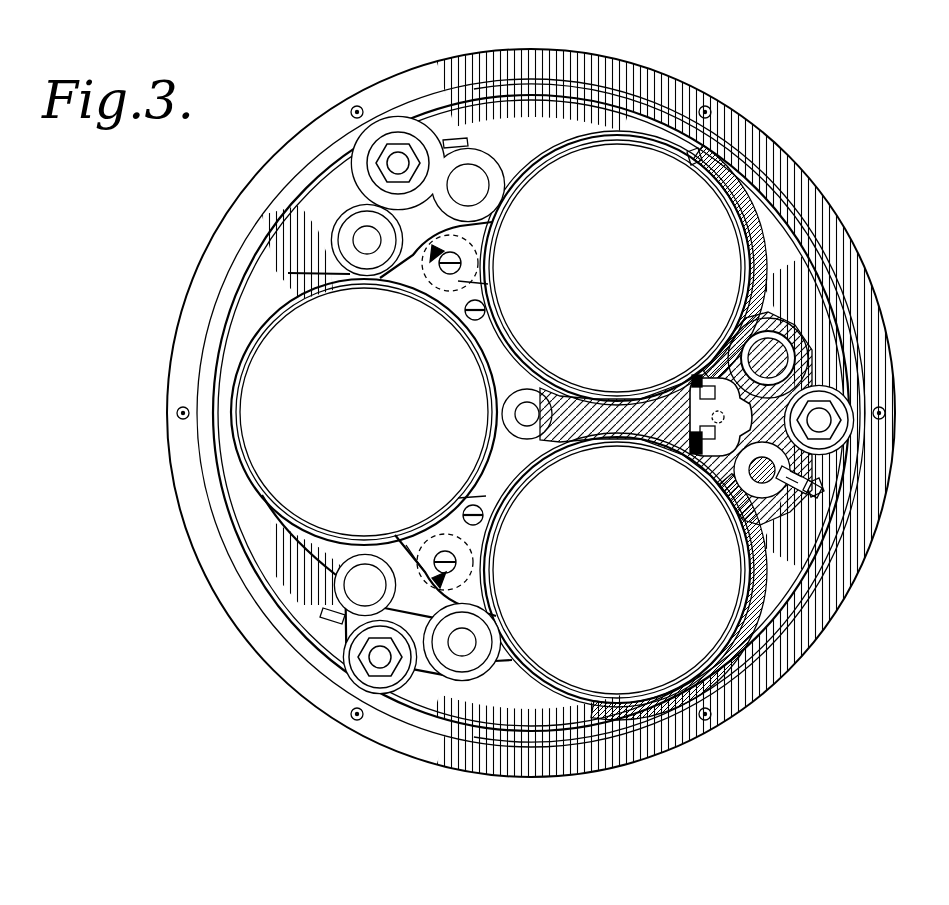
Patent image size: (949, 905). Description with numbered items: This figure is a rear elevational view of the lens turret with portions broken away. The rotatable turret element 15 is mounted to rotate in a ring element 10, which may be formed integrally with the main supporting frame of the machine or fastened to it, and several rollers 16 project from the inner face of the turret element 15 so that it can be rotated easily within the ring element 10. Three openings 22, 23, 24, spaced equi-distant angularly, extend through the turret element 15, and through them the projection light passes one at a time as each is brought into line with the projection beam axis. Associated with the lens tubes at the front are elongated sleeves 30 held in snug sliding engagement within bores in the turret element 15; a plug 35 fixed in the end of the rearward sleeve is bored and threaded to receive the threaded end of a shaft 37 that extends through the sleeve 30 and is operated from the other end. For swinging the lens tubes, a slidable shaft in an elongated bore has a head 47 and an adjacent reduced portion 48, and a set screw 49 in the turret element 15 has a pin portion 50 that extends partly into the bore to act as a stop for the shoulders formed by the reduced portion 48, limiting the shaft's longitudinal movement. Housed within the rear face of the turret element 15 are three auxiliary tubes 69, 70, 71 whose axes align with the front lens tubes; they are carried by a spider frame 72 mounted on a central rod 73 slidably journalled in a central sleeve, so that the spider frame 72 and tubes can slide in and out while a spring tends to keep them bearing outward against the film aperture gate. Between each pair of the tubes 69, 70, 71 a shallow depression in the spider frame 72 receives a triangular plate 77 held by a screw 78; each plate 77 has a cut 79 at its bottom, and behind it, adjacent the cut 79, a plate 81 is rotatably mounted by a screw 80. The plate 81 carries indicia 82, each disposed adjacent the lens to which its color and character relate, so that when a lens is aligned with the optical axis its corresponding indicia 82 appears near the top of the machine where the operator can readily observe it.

The ring element 10 is at (270, 233).
The turret element 15 is at (563, 108).
The roller 16 is at (394, 141).
The opening 22 is at (617, 268).
The opening 23 is at (364, 412).
The opening 24 is at (617, 570).
The elongated sleeve 30 is at (790, 340).
The plug 35 is at (347, 225).
The shaft 37 is at (360, 238).
The head 47 is at (472, 175).
The reduced portion 48 is at (805, 470).
The set screw 49 is at (455, 138).
The pin portion 50 is at (814, 482).
The auxiliary tube 69 is at (294, 300).
The auxiliary tube 70 is at (648, 148).
The auxiliary tube 71 is at (680, 442).
The spider frame 72 is at (528, 490).
The central rod 73 is at (585, 398).
The triangular plate 77 is at (476, 290).
The screw 78 is at (486, 311).
The cut 79 is at (408, 545).
The screw 80 is at (454, 263).
The plate 81 is at (468, 240).
The indicia 82 is at (436, 254).